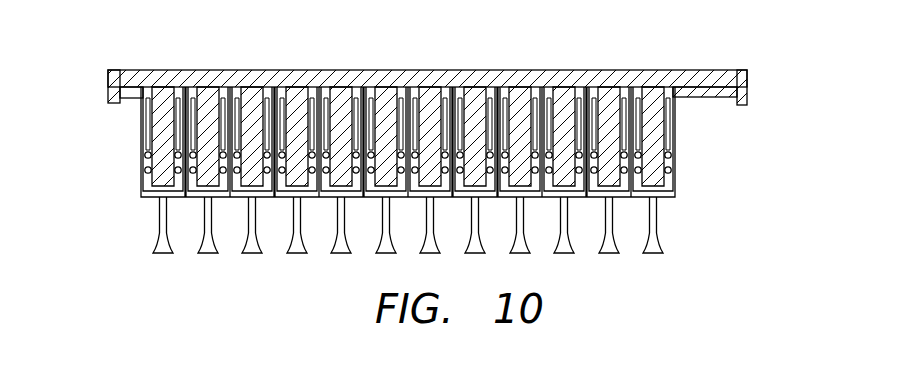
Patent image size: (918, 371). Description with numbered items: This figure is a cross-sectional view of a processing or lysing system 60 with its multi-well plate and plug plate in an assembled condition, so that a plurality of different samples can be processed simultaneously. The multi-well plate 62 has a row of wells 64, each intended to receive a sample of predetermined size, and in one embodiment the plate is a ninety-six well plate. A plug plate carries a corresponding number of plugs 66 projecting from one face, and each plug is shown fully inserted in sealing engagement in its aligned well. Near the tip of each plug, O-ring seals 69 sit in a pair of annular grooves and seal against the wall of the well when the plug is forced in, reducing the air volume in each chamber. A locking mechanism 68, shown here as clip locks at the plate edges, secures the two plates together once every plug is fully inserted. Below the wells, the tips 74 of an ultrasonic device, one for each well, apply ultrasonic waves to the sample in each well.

The lysing system 60 is at (770, 168).
The multi-well plate 62 is at (694, 94).
The wells 64 is at (143, 187).
The plugs 66 is at (168, 102).
The locking mechanism 68 is at (113, 100).
The O-ring seals 69 is at (146, 169).
The tips 74 is at (162, 217).